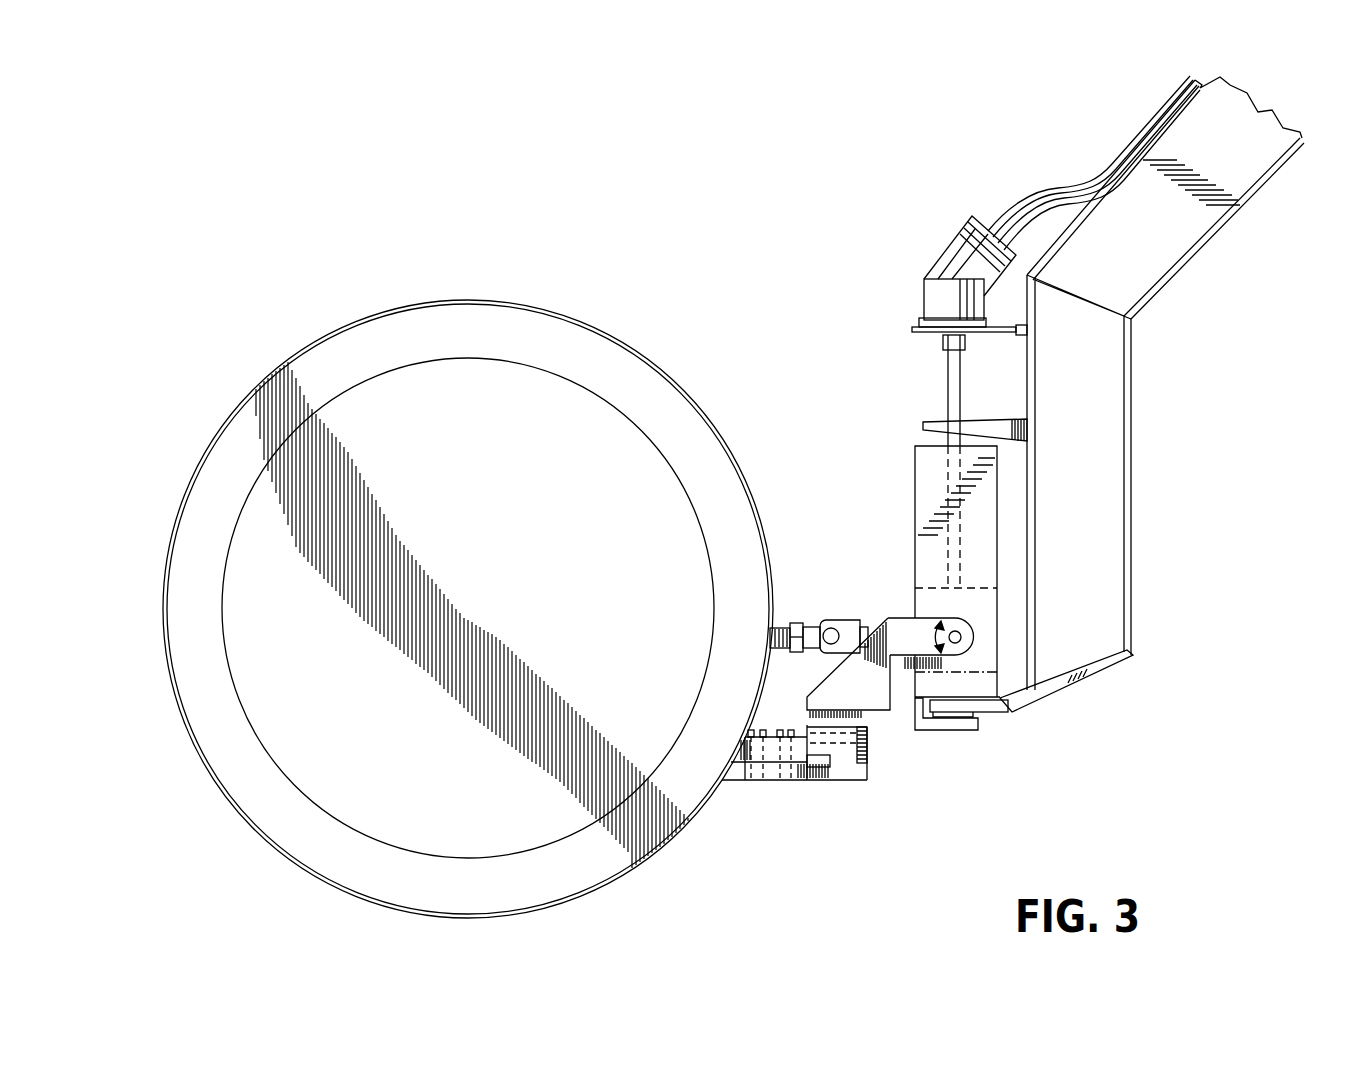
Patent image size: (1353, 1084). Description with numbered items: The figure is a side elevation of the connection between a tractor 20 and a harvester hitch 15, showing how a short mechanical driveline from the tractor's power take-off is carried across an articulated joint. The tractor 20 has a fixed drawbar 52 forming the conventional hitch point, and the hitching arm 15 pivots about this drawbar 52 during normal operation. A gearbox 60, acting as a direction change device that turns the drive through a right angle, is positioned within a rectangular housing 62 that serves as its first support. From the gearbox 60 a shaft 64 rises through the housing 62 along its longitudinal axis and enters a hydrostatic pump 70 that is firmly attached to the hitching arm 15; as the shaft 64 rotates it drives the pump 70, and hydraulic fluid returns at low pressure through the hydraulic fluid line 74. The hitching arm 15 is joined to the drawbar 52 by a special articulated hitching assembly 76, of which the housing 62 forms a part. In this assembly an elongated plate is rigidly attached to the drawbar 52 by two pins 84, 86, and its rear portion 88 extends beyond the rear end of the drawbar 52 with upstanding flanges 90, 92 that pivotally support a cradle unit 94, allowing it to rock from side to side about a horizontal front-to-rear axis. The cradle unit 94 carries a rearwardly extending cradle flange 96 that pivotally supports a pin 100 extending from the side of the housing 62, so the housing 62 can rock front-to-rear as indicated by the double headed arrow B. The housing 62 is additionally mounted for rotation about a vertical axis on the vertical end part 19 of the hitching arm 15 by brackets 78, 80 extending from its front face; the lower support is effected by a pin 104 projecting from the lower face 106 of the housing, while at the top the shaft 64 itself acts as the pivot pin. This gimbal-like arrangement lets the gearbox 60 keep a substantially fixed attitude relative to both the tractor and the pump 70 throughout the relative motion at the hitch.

The harvester hitch 15 is at (1241, 163).
The vertical end part 19 is at (1118, 432).
The tractor 20 is at (446, 266).
The fixed drawbar 52 is at (740, 782).
The gearbox 60 is at (935, 584).
The rectangular housing 62 is at (917, 458).
The shaft 64 is at (946, 369).
The hydrostatic pump 70 is at (958, 245).
The hydraulic fluid line 74 is at (1060, 190).
The articulated hitching assembly 76 is at (866, 503).
The bracket 78 is at (996, 425).
The bracket 80 is at (1000, 713).
The pin 84 is at (751, 728).
The pin 86 is at (790, 728).
The rear portion 88 is at (829, 752).
The upstanding flange 90 is at (862, 778).
The upstanding flange 92 is at (867, 750).
The cradle unit 94 is at (843, 722).
The cradle flange 96 is at (963, 621).
The pin 100 is at (962, 637).
The pin 104 is at (957, 690).
The lower face 106 is at (988, 685).
The double headed arrow B is at (933, 634).